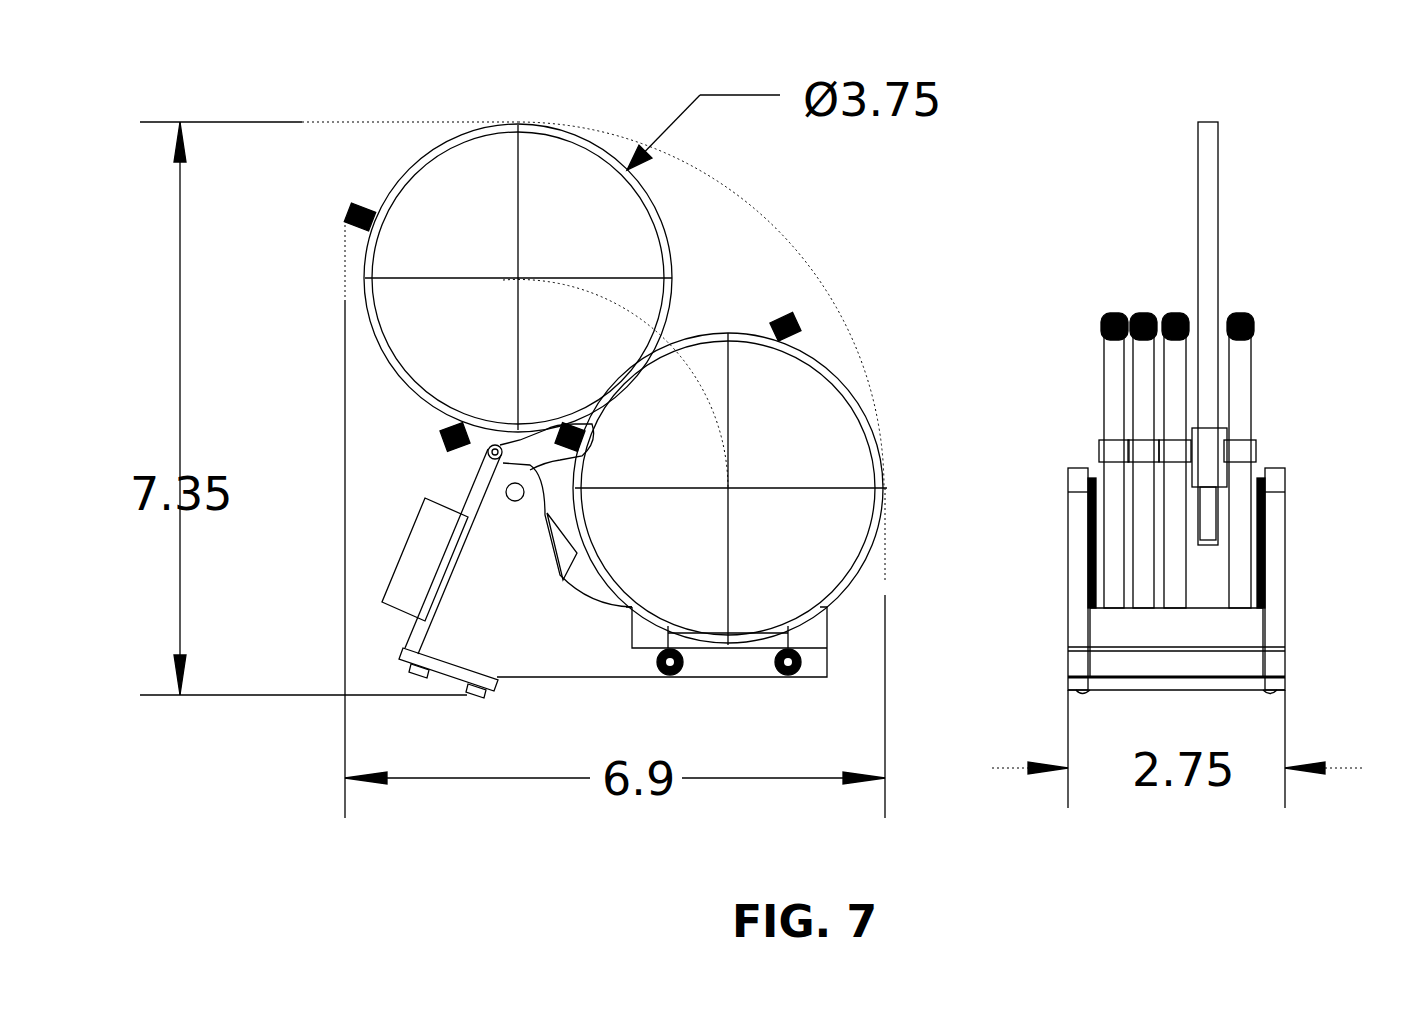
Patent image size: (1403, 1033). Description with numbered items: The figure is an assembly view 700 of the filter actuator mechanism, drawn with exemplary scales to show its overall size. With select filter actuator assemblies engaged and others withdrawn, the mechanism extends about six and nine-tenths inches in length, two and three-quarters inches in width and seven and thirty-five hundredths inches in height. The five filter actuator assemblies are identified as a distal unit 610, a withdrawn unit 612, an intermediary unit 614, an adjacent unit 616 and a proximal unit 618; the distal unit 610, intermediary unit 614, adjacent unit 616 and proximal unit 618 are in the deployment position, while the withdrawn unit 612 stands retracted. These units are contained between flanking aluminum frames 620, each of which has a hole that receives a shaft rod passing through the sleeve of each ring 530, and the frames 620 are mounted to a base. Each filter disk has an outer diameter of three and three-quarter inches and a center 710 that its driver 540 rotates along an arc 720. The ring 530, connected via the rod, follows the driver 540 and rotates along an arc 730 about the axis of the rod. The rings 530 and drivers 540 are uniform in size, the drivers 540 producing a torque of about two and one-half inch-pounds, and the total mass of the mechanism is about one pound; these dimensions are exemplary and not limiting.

The ring 530 is at (390, 193).
The driver 540 is at (424, 497).
The distal unit 610 is at (1250, 368).
The withdrawn unit 612 is at (1222, 183).
The intermediary unit 614 is at (1177, 313).
The adjacent unit 616 is at (1143, 313).
The proximal unit 618 is at (1105, 372).
The frame 620 is at (532, 633).
The assembly view 700 is at (1172, 321).
The center 710 is at (752, 504).
The arc 720 is at (673, 340).
The arc 730 is at (785, 237).